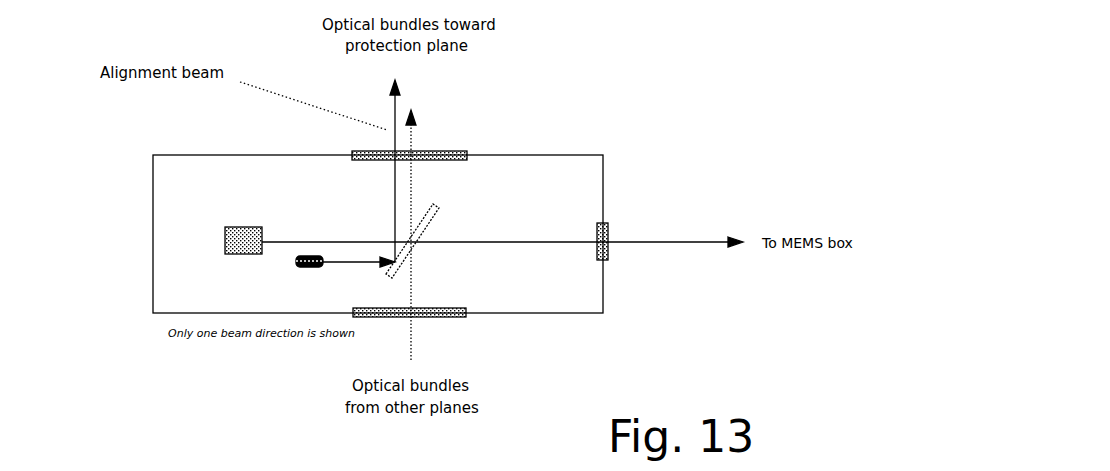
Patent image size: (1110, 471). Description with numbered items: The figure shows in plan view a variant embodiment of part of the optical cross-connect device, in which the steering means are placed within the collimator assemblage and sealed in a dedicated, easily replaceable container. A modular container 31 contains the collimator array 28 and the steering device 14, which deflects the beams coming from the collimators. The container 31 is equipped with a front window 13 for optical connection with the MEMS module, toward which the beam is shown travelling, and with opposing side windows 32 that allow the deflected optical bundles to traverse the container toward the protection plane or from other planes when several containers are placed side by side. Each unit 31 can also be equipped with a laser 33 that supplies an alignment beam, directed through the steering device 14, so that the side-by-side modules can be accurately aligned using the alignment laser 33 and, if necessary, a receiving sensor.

The front window 13 is at (607, 256).
The steering device 14 is at (430, 220).
The collimator array 28 is at (226, 243).
The modular container 31 is at (538, 158).
The side windows 32 is at (447, 150).
The laser 33 is at (296, 263).